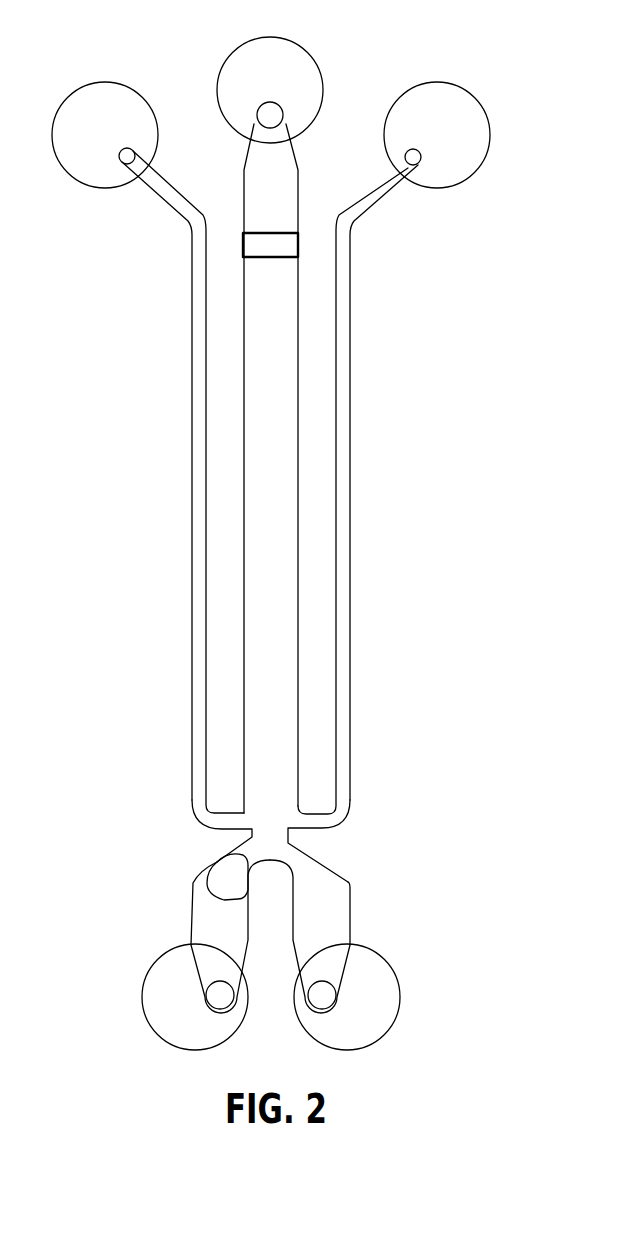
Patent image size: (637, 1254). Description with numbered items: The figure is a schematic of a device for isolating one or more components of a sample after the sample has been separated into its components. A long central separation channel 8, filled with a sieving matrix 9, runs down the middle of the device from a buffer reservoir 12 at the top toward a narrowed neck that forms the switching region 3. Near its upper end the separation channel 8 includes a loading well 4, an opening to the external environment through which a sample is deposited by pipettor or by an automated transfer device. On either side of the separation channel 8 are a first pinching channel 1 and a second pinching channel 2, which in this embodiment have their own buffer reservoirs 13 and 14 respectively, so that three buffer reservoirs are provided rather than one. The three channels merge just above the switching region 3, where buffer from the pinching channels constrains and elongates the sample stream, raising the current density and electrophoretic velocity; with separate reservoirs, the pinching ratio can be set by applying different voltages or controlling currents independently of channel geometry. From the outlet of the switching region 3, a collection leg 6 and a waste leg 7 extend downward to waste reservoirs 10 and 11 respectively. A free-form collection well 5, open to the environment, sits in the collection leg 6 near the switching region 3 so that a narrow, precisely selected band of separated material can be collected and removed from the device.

The first pinching channel 1 is at (191, 365).
The second pinching channel 2 is at (350, 365).
The switching region 3 is at (290, 832).
The loading well 4 is at (299, 247).
The collection well 5 is at (213, 860).
The collection leg 6 is at (191, 892).
The waste leg 7 is at (350, 892).
The separation channel 8 is at (298, 481).
The sieving matrix 9 is at (279, 574).
The waste reservoir 10 is at (173, 1031).
The waste reservoir 11 is at (343, 1031).
The buffer reservoir 12 is at (255, 86).
The buffer reservoir 13 is at (118, 133).
The buffer reservoir 14 is at (447, 127).